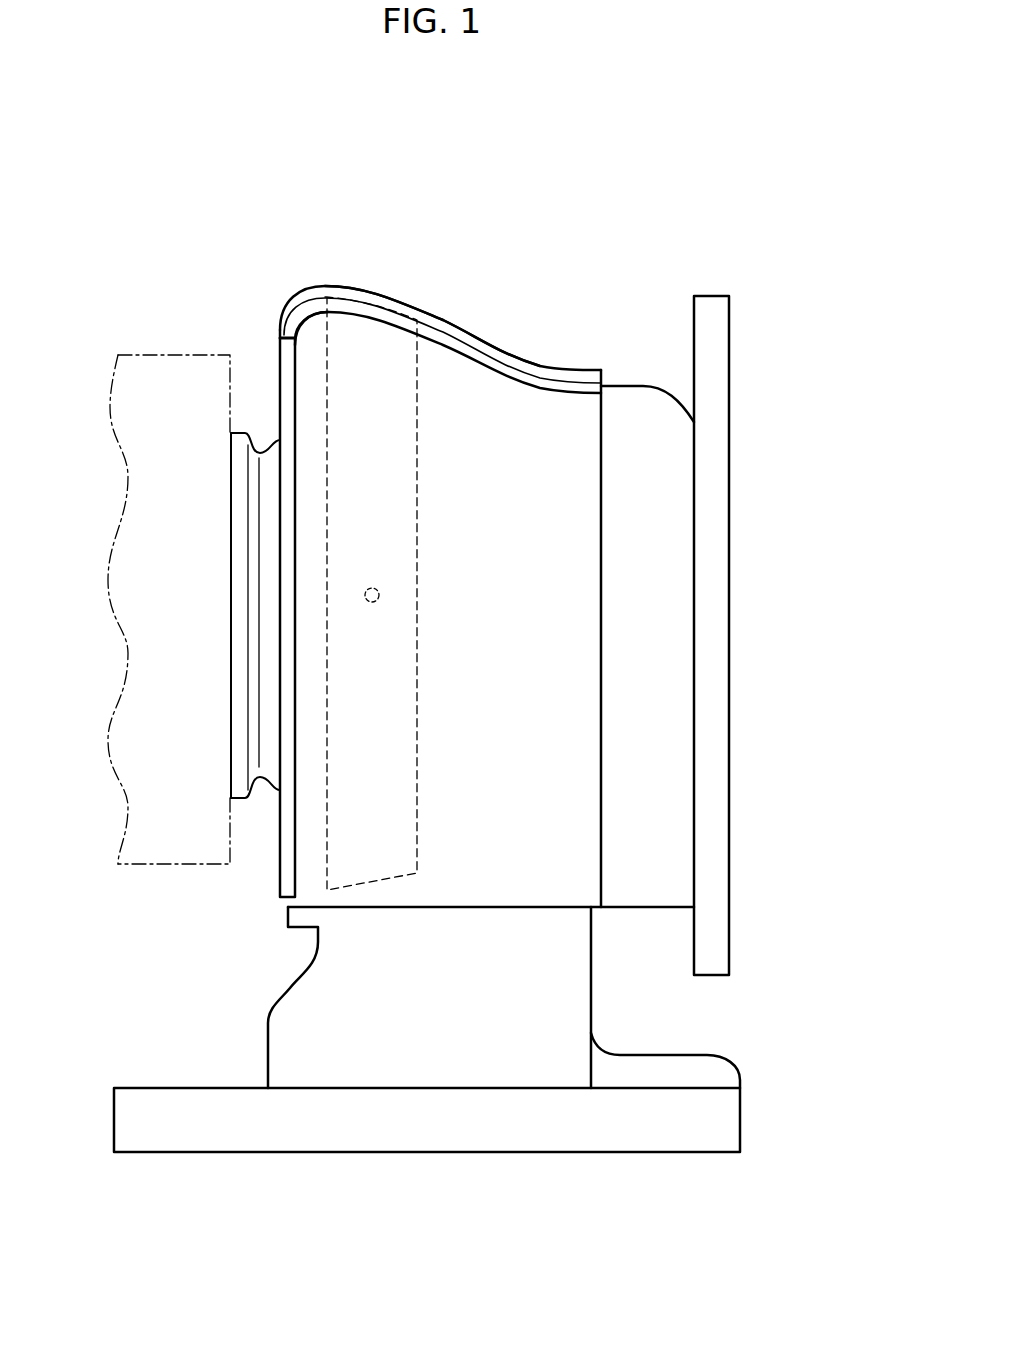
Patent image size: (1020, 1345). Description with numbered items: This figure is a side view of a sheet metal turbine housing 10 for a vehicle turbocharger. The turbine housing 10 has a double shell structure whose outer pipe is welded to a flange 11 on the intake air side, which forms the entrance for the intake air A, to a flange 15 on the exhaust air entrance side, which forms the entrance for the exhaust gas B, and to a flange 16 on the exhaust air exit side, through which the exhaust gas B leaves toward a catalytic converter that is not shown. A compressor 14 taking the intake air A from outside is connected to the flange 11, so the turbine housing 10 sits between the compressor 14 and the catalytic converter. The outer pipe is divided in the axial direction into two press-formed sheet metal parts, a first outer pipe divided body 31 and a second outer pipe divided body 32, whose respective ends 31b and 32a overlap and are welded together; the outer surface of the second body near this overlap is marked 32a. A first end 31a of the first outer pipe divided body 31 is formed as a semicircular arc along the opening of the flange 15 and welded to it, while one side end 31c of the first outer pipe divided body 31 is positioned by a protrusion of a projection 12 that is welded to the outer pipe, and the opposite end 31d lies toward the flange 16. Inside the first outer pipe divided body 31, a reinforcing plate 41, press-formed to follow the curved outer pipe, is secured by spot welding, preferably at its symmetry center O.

The turbine housing 10 is at (502, 292).
The flange on intake air side 11 is at (244, 433).
The projection 12 is at (280, 350).
The compressor 14 is at (150, 353).
The flange on exhaust air entrance side 15 is at (425, 1155).
The flange on exhaust air exit side 16 is at (722, 525).
The first outer pipe divided body 31 is at (441, 657).
The second outer pipe divided body 32 is at (461, 313).
The first end 31a is at (512, 907).
The end of first outer pipe divided body 31b is at (400, 337).
The one side end 31c is at (303, 337).
The end portion 31d is at (570, 415).
The end of second outer pipe divided body 32a is at (440, 330).
The plate 41 is at (412, 523).
The symmetry center O is at (380, 592).
The intake air A is at (97, 585).
The exhaust gas B is at (801, 585).